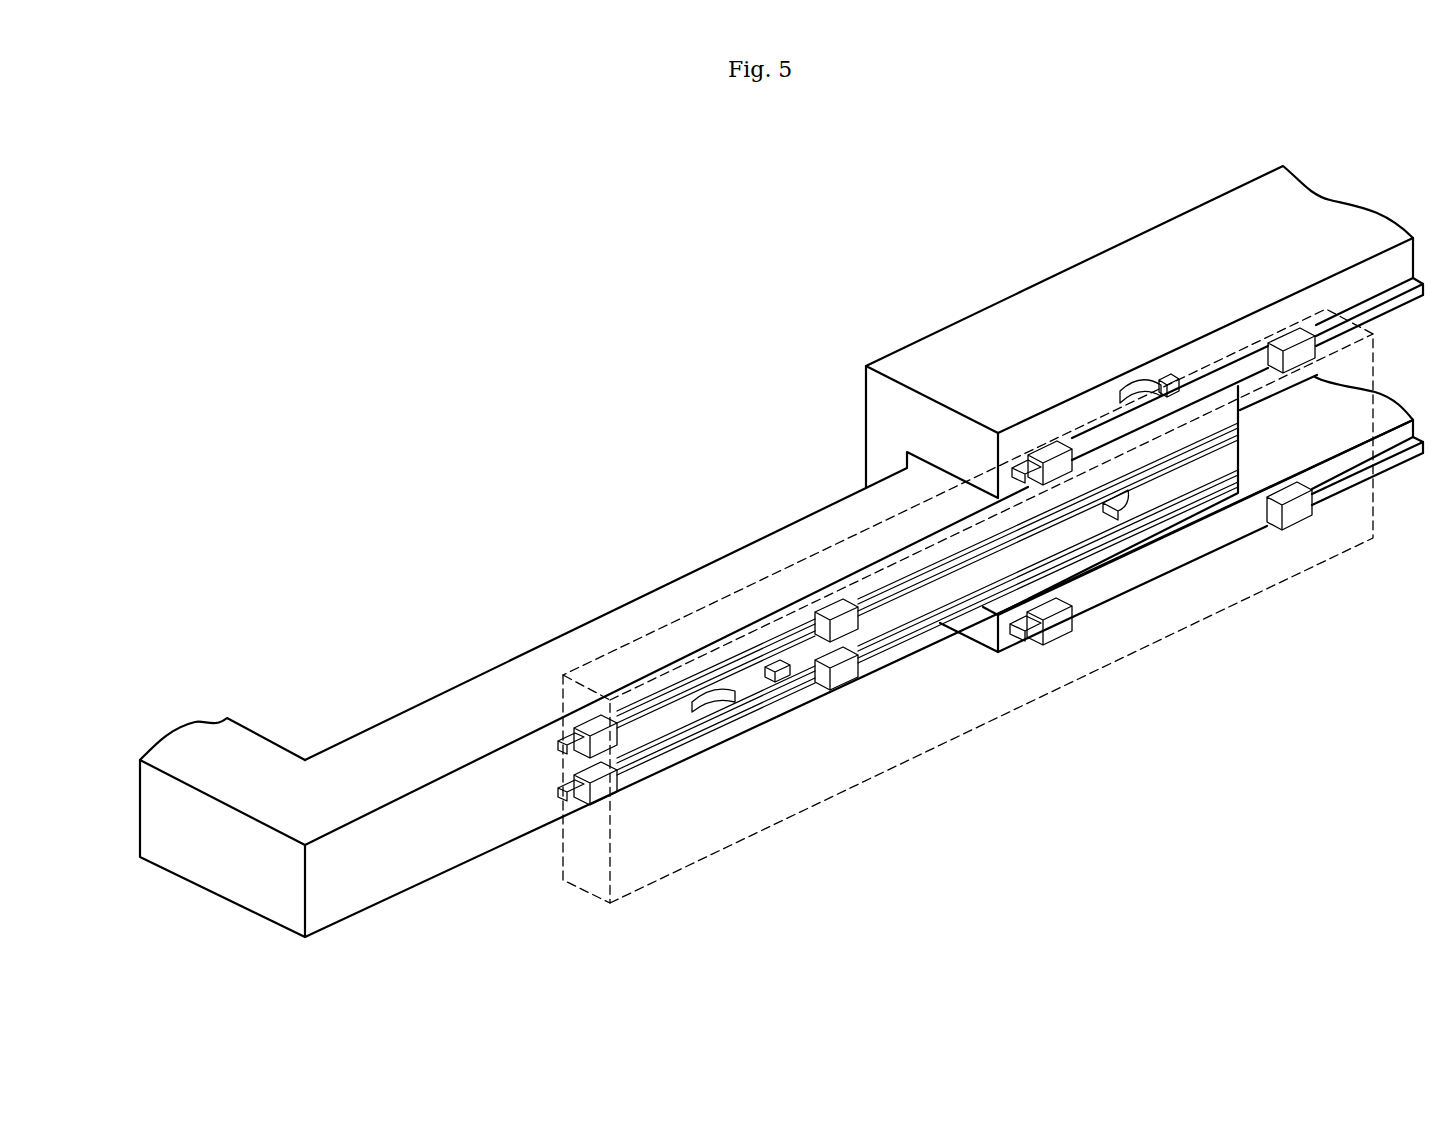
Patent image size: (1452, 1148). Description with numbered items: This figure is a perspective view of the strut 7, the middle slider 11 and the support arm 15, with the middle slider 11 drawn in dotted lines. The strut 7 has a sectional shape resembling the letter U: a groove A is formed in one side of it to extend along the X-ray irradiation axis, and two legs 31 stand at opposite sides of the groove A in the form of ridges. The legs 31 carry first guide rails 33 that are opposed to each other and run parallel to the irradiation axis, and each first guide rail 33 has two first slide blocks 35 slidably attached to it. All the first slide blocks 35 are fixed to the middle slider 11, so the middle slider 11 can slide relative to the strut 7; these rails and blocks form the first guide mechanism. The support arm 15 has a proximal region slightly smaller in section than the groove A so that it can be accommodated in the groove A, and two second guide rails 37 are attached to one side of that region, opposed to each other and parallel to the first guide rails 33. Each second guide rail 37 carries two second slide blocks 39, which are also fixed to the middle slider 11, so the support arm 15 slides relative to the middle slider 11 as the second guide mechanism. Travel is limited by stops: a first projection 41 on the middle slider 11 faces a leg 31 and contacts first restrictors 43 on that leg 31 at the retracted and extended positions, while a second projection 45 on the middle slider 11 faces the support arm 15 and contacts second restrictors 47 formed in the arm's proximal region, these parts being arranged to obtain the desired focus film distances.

The strut 7 is at (758, 377).
The middle slider 11 is at (700, 880).
The support arm 15 is at (372, 728).
The legs 31 is at (951, 443).
The first guide rails 33 is at (1003, 483).
The first slide blocks 35 is at (1041, 450).
The second guide rails 37 is at (556, 747).
The second slide blocks 39 is at (588, 716).
The first projection 41 is at (1171, 372).
The first restrictors 43 is at (1129, 379).
The second projection 45 is at (766, 683).
The second restrictors 47 is at (733, 681).
The groove A is at (906, 469).